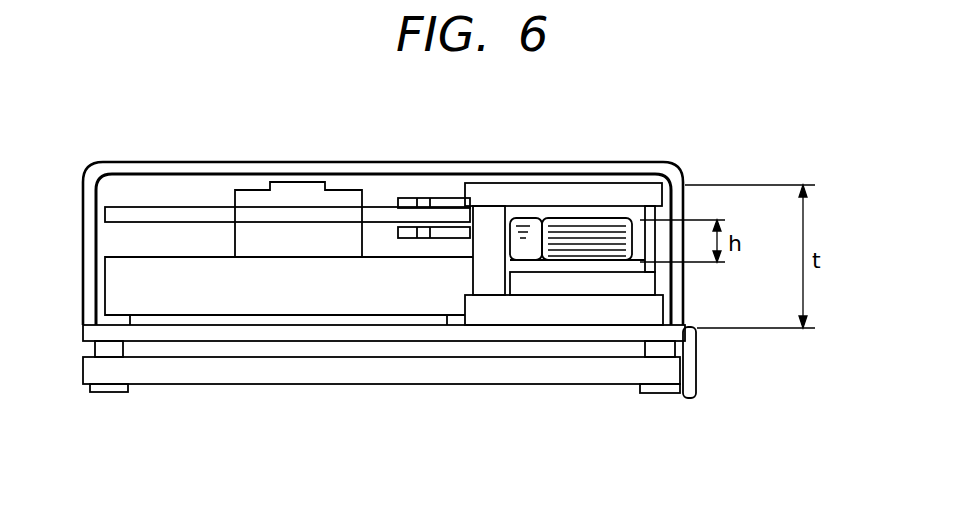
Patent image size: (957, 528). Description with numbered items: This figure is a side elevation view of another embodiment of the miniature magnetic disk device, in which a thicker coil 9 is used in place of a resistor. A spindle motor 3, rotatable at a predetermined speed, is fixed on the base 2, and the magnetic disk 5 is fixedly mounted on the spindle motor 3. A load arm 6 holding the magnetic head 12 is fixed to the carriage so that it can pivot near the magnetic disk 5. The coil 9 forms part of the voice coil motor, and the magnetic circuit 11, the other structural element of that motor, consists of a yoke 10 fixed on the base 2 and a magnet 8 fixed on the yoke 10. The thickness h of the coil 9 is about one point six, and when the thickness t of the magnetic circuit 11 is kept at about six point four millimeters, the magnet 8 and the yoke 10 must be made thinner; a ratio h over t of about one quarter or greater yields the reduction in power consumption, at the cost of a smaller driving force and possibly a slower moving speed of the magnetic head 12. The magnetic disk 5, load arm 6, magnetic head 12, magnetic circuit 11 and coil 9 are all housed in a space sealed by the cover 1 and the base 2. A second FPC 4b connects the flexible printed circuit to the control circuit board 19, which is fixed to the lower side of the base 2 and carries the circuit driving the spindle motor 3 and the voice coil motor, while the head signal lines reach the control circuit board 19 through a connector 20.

The cover 1 is at (255, 165).
The base 2 is at (372, 332).
The spindle motor 3 is at (268, 297).
The second FPC 4b is at (696, 355).
The magnetic disk 5 is at (163, 210).
The load arm 6 is at (443, 197).
The magnet 8 is at (583, 283).
The coil 9 is at (625, 222).
The yoke 10 is at (558, 193).
The magnetic circuit 11 is at (497, 315).
The magnetic head 12 is at (398, 228).
The control circuit board 19 is at (167, 373).
The connector 20 is at (663, 398).